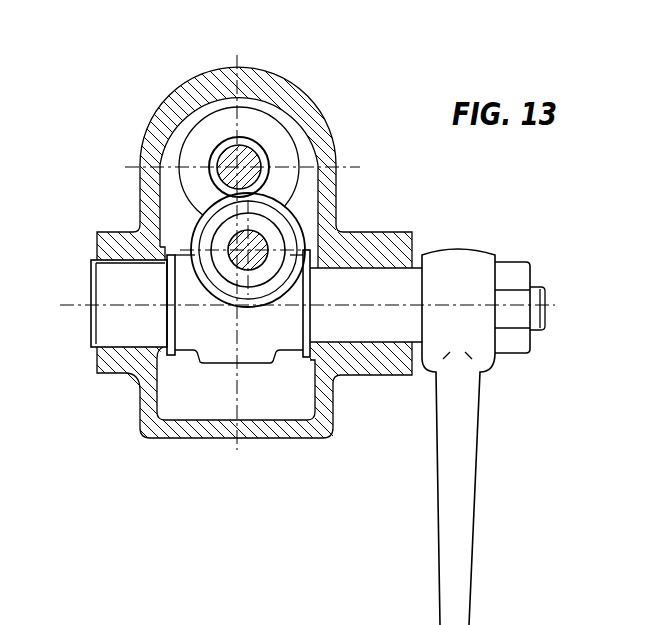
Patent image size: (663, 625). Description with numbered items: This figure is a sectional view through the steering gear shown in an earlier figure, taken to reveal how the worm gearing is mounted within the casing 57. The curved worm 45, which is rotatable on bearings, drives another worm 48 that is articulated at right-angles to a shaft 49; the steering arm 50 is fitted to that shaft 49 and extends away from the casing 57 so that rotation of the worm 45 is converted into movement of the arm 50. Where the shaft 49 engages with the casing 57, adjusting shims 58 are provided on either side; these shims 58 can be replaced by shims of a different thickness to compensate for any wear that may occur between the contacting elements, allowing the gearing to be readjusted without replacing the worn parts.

The casing 57 is at (292, 94).
The curved worm 45 is at (282, 158).
The worm 48 is at (287, 232).
The shaft 49 is at (366, 325).
The adjusting shims 58 is at (300, 318).
The steering arm 50 is at (457, 527).